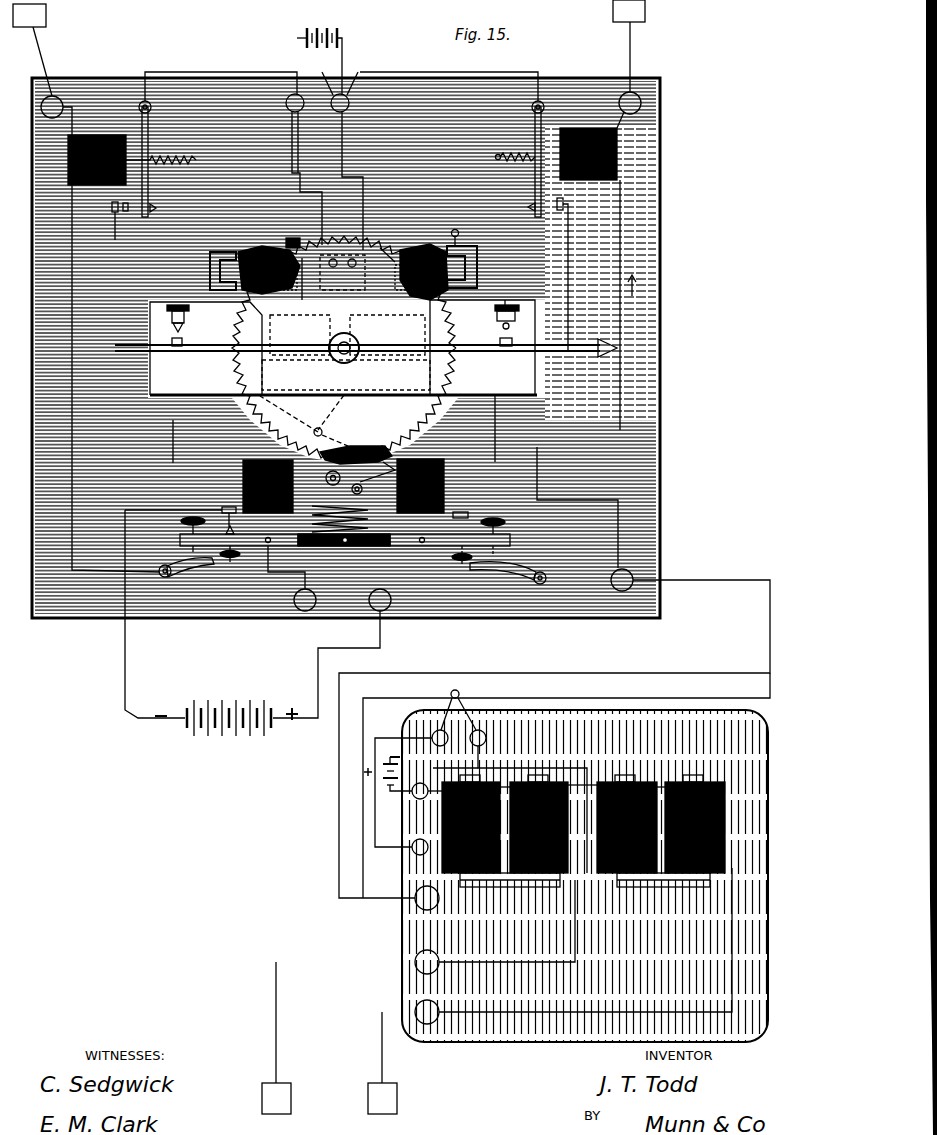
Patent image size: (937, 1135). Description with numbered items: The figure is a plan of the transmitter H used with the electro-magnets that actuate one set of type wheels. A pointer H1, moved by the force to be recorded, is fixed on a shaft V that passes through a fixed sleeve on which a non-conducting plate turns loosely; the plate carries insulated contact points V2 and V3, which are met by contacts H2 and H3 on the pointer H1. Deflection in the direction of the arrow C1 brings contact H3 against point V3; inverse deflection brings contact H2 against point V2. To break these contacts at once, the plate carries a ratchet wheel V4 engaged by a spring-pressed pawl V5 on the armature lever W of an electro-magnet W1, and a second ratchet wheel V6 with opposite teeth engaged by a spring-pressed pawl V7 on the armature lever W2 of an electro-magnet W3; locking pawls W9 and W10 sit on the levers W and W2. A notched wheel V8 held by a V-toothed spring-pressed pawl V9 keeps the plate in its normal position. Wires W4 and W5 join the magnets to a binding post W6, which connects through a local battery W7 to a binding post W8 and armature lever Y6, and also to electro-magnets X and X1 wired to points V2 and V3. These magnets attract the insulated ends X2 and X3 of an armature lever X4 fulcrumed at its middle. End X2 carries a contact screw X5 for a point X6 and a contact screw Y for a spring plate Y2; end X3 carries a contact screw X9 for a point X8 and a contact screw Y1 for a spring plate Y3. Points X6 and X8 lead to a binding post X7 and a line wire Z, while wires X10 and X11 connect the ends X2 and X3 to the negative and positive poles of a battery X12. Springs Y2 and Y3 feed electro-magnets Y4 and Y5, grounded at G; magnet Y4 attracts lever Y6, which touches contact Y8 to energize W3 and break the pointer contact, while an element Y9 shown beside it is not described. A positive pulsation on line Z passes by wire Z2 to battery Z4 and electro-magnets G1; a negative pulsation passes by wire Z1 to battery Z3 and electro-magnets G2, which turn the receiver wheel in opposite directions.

The transmitter H is at (661, 470).
The ground G is at (329, 557).
The electro-magnet Y4 is at (68, 155).
The armature lever Y6 is at (211, 144).
The contact point Y8 is at (112, 206).
The local battery W7 is at (332, 54).
The binding post W6 is at (286, 102).
The binding post W8 is at (430, 161).
The electro-magnet Y5 is at (602, 271).
The spring plate Y2 is at (530, 163).
The contact Y9 is at (575, 273).
The arrow C1 is at (633, 299).
The shaft V is at (346, 364).
The contact H2 is at (206, 348).
The contact H3 is at (482, 347).
The pointer H1 is at (598, 352).
The contact point V2 is at (150, 303).
The spring-pressed pawl V5 is at (470, 300).
The contact point V3 is at (508, 302).
The electro-magnet W3 is at (296, 310).
The electro-magnet W1 is at (395, 310).
The second ratchet wheel V6 is at (337, 322).
The spring-pressed pawl V7 is at (210, 270).
The armature lever W2 is at (266, 244).
The wire W5 is at (322, 212).
The locking pawl W10 is at (295, 230).
The armature lever W is at (460, 245).
The wire W4 is at (414, 226).
The locking pawl W9 is at (382, 234).
The ratchet wheel V4 is at (430, 248).
The notched wheel V8 is at (380, 450).
The spring-pressed pawl V9 is at (340, 511).
The electro-magnet X is at (248, 458).
The electro-magnet X1 is at (444, 476).
The insulated end of armature lever X3 is at (345, 552).
The insulated end of armature lever X2 is at (298, 552).
The armature lever X4 is at (364, 552).
The contact screw Y is at (182, 524).
The contact screw X5 is at (234, 548).
The contact screw Y1 is at (507, 537).
The contact screw X9 is at (455, 566).
The contact point X6 is at (226, 506).
The contact point X8 is at (466, 512).
The spring plate Y3 is at (508, 575).
The binding post X7 is at (614, 572).
The wire X10 is at (258, 610).
The wire X11 is at (318, 648).
The battery X12 is at (248, 695).
The line wire Z is at (554, 732).
The wire Z1 is at (425, 768).
The wire Z2 is at (510, 781).
The battery Z3 is at (383, 784).
The battery Z4 is at (555, 903).
The electro-magnets G1 is at (506, 874).
The electro-magnets G2 is at (664, 874).